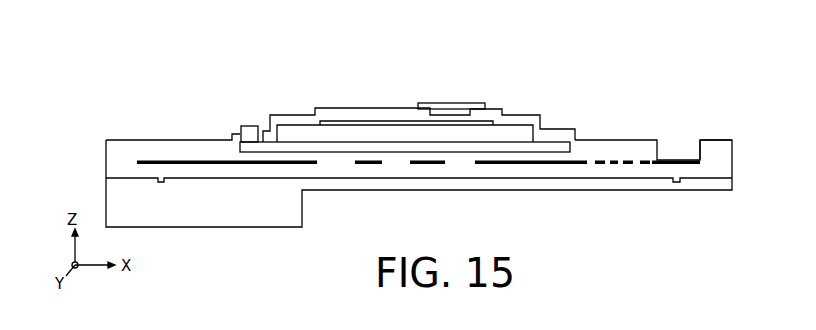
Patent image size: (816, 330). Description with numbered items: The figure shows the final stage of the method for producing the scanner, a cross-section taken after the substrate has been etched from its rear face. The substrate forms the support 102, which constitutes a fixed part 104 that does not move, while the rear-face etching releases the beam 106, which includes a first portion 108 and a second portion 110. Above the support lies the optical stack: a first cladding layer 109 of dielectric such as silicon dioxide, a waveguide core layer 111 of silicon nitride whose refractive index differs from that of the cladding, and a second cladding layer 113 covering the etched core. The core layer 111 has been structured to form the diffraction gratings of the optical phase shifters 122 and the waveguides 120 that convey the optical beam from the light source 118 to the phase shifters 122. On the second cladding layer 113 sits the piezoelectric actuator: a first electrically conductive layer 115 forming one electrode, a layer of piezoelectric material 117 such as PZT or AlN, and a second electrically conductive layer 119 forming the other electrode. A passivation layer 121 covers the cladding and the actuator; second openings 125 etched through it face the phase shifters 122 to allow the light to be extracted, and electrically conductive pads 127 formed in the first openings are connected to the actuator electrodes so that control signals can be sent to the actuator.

The support 102 is at (96, 195).
The fixed part 104 is at (225, 218).
The beam 106 is at (97, 164).
The first portion 108 is at (204, 178).
The first cladding layer 109 is at (713, 170).
The second portion 110 is at (597, 185).
The waveguide core layer 111 is at (703, 157).
The second cladding layer 113 is at (722, 148).
The first electrically conductive layer 115 is at (482, 142).
The layer of piezoelectric material 117 is at (385, 135).
The light source 118 is at (157, 161).
The second electrically conductive layer 119 is at (348, 115).
The waveguide 120 is at (506, 160).
The passivation layer 121 is at (293, 116).
The optical phase shifter 122 is at (612, 157).
The second opening 125 is at (674, 148).
The electrically conductive pad 127 is at (253, 125).